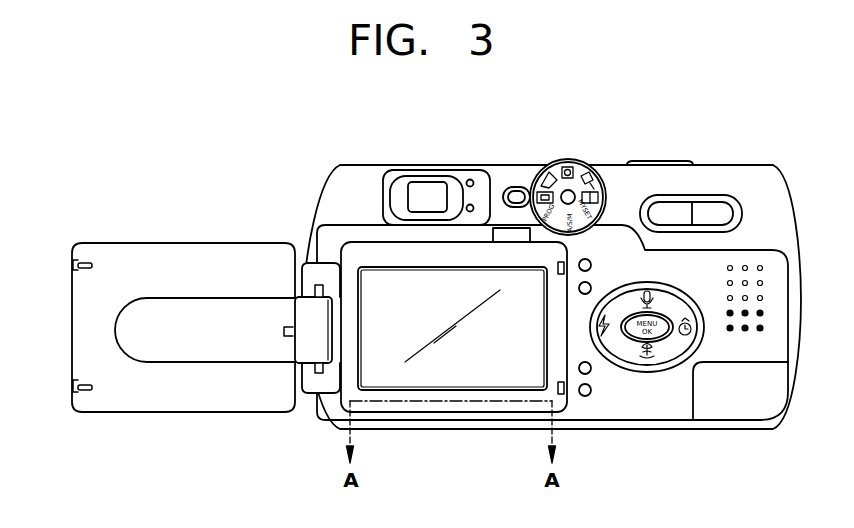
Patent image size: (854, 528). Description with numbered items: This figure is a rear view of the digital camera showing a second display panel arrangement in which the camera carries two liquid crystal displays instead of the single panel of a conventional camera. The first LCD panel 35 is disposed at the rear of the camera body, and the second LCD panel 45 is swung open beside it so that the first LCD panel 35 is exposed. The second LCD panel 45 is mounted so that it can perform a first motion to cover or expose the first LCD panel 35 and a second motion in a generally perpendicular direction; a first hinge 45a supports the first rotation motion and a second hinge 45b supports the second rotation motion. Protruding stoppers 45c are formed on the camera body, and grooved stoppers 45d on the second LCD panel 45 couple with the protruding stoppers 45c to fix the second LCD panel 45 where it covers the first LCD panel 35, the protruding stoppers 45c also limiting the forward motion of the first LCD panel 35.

The first LCD panel 35 is at (447, 380).
The second LCD panel 45 is at (183, 408).
The first hinge 45a is at (318, 286).
The second hinge 45b is at (288, 328).
The protruding stoppers 45c is at (563, 262).
The grooved stoppers 45d is at (73, 262).